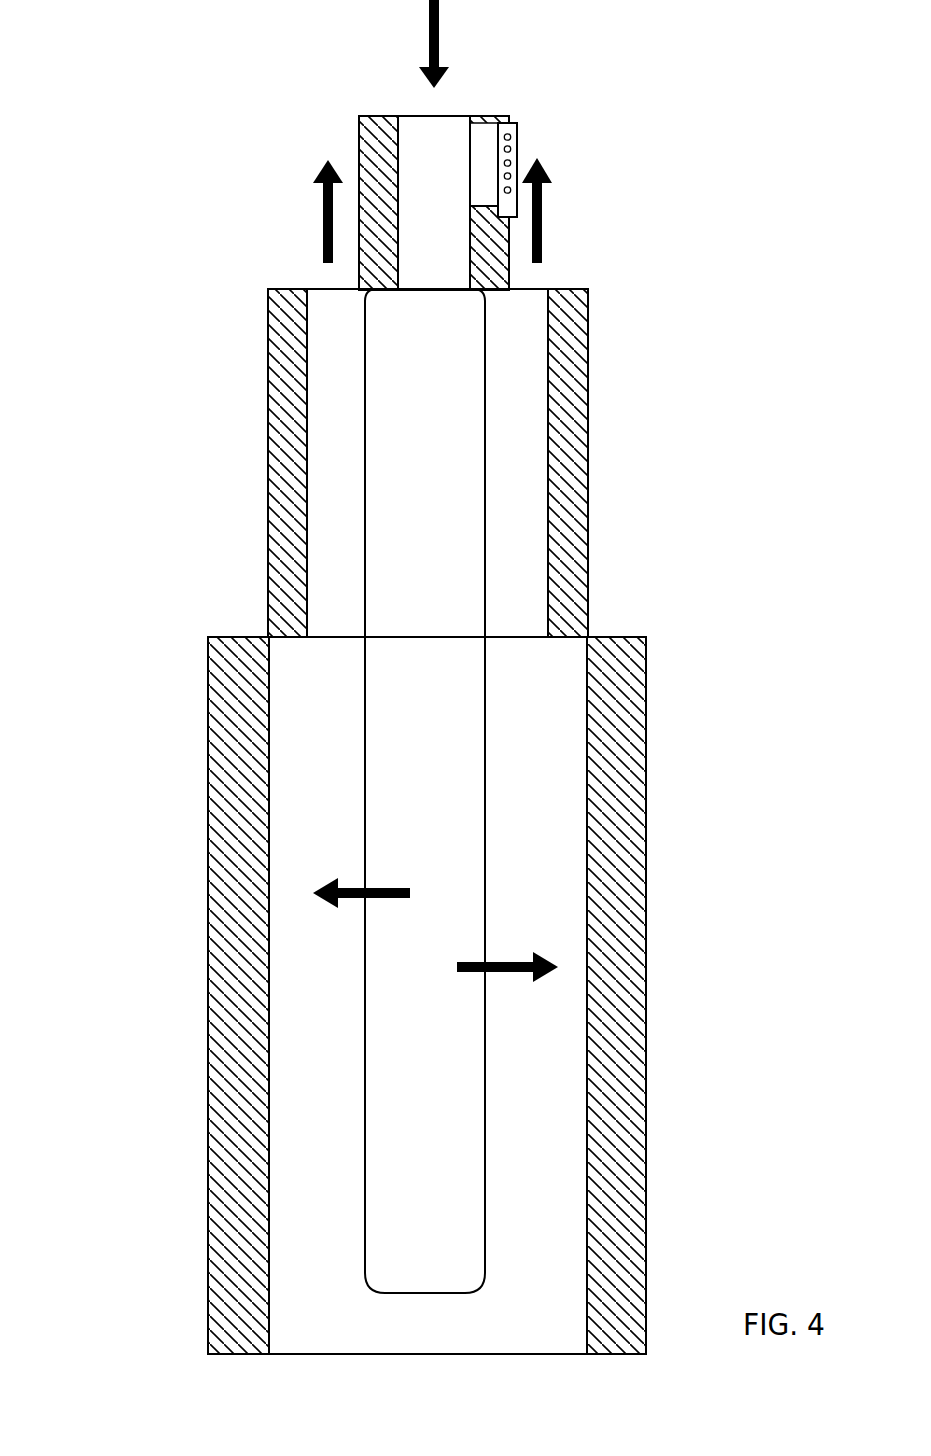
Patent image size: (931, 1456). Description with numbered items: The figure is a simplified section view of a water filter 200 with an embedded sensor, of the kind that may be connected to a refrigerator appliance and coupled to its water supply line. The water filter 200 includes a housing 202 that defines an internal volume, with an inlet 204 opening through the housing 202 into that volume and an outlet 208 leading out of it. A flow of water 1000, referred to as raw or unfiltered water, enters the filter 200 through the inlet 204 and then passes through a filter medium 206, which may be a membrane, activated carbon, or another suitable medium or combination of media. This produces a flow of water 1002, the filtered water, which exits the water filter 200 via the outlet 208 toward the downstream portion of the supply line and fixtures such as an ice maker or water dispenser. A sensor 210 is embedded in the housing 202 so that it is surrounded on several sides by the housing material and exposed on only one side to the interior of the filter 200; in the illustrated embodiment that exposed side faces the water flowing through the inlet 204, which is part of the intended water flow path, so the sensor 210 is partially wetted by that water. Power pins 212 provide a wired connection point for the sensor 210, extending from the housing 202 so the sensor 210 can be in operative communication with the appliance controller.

The water filter 200 is at (140, 362).
The housing 202 is at (588, 448).
The inlet 204 is at (411, 130).
The filter medium 206 is at (487, 788).
The outlet 208 is at (320, 300).
The sensor 210 is at (488, 135).
The power pins 212 is at (517, 145).
The flow of water 1000 is at (437, 15).
The flow of water 1002 is at (322, 195).